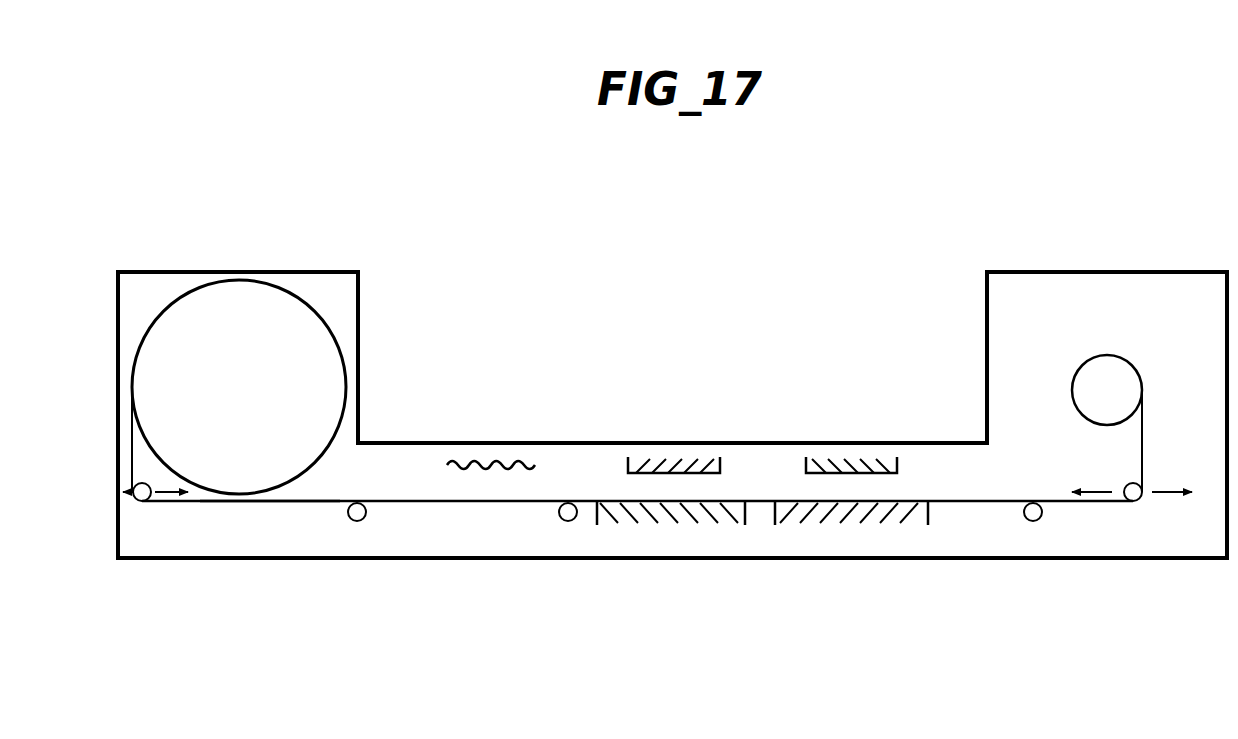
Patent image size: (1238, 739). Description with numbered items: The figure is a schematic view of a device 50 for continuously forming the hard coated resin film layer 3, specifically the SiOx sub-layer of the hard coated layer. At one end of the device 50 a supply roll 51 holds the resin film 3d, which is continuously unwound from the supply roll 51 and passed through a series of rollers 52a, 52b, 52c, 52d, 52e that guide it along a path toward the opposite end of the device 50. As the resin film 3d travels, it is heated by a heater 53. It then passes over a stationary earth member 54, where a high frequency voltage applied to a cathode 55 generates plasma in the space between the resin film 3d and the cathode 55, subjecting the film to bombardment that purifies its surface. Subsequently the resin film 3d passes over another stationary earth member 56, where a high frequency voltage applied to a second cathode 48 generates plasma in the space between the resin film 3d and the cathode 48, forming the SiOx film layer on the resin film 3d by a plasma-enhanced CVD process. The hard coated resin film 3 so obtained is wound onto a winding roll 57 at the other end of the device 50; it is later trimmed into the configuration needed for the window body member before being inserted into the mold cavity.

The hard coated resin film layer 3 is at (963, 503).
The resin film 3d is at (283, 502).
The cathode 48 is at (837, 465).
The device 50 is at (690, 318).
The supply roll 51 is at (260, 290).
The roller 52a is at (145, 502).
The roller 52b is at (358, 521).
The roller 52c is at (567, 521).
The roller 52d is at (1027, 521).
The roller 52e is at (1125, 502).
The heater 53 is at (479, 463).
The stationary earth member 54 is at (678, 523).
The cathode 55 is at (667, 465).
The stationary earth member 56 is at (835, 523).
The winding roll 57 is at (1102, 368).